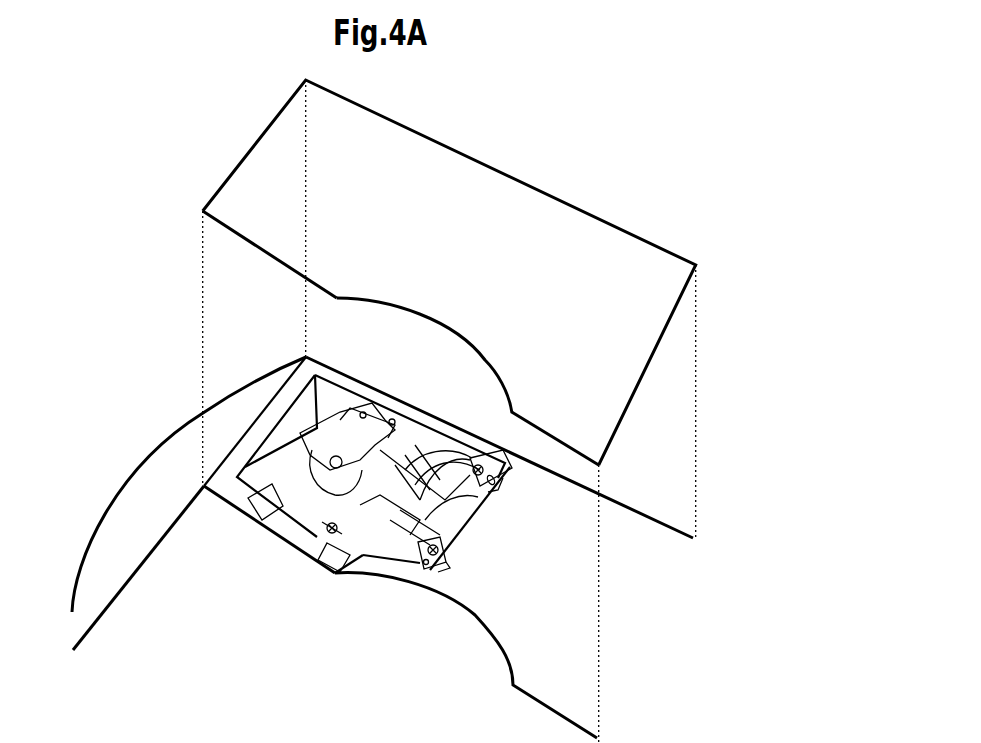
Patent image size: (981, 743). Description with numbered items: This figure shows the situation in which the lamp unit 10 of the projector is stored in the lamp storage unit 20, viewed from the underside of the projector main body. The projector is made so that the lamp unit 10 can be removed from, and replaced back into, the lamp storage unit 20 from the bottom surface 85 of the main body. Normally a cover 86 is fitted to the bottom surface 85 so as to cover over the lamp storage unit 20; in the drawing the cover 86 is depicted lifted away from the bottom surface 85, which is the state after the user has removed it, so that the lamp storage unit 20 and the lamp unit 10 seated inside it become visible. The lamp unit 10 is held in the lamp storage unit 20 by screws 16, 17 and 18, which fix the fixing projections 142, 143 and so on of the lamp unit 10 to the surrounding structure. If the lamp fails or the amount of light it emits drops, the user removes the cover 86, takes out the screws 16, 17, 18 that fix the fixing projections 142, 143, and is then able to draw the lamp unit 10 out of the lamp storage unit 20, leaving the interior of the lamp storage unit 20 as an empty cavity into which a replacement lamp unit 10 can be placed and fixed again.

The lamp unit 10 is at (425, 428).
The screw 16 is at (503, 456).
The screw 17 is at (455, 555).
The screw 18 is at (312, 549).
The lamp storage unit 20 is at (338, 385).
The bottom surface 85 is at (609, 529).
The cover 86 is at (551, 220).
The fixing projection 142 is at (500, 477).
The fixing projection 143 is at (439, 561).